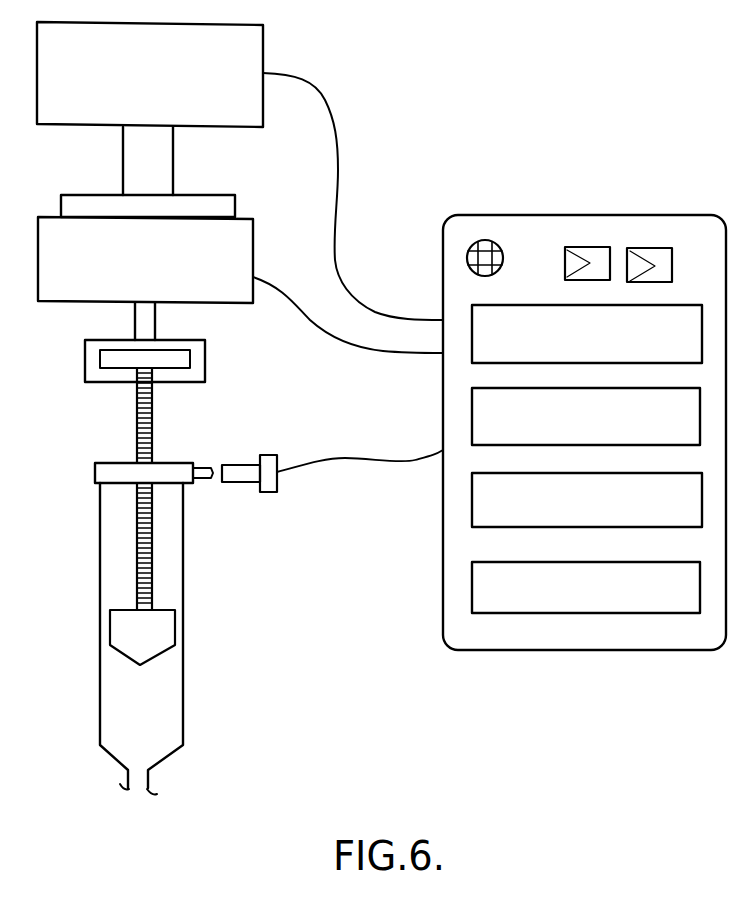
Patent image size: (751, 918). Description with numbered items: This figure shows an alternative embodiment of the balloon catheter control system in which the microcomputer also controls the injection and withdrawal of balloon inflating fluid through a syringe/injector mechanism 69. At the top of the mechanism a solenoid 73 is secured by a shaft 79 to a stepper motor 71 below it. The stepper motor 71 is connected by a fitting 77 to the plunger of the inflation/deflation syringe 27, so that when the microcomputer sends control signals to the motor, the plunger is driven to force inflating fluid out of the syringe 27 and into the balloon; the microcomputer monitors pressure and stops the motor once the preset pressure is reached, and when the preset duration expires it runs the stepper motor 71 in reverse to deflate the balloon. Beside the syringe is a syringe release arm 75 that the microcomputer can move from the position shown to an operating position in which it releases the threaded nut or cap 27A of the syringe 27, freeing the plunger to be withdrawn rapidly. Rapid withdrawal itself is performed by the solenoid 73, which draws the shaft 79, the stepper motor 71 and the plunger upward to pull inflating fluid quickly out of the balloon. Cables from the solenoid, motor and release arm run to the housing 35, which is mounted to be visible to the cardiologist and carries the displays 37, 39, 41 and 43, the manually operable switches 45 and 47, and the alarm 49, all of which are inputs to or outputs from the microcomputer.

The solenoid 73 is at (265, 52).
The shaft 79 is at (173, 163).
The stepper motor 71 is at (253, 252).
The fitting 77 is at (205, 362).
The syringe/injector mechanism 69 is at (95, 437).
The threaded nut or cap 27A is at (172, 463).
The syringe release arm 75 is at (270, 492).
The inflation/deflation syringe 27 is at (183, 690).
The housing 35 is at (443, 592).
The alarm 49 is at (497, 246).
The manually operable switch 45 is at (566, 262).
The manually operable switch 47 is at (672, 268).
The display 37 is at (637, 306).
The display 39 is at (601, 389).
The display 41 is at (594, 473).
The display 43 is at (599, 562).